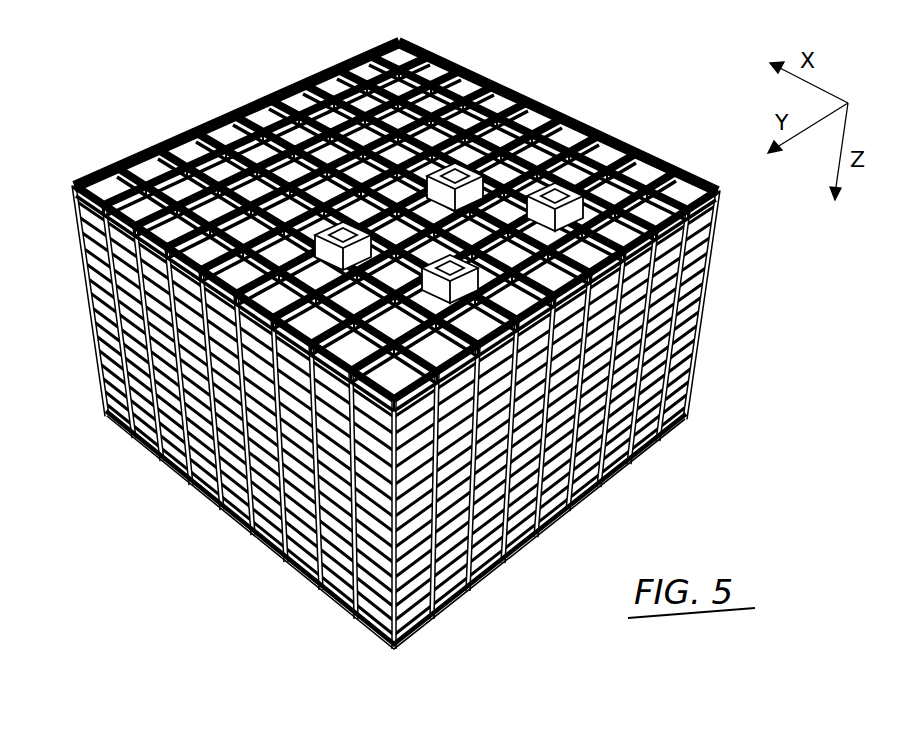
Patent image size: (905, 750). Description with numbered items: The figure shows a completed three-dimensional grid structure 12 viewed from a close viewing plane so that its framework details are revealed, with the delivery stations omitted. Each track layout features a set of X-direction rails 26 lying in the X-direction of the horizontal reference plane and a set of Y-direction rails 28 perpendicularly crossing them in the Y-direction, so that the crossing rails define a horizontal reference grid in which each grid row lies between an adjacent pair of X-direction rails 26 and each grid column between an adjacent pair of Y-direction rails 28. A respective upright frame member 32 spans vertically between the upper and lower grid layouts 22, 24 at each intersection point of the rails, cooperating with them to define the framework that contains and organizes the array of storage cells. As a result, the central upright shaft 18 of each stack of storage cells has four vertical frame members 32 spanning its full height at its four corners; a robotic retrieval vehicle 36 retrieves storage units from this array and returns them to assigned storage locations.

The lattice structure 12 is at (416, 345).
The central upright shaft 18 is at (300, 324).
The upper grid layout 22 is at (690, 207).
The lower grid layout 24 is at (668, 442).
The X-direction rails 26 is at (572, 134).
The Y-direction rails 28 is at (348, 80).
The upright frame member 32 is at (315, 590).
The robotic retrieval vehicle 36 is at (600, 312).